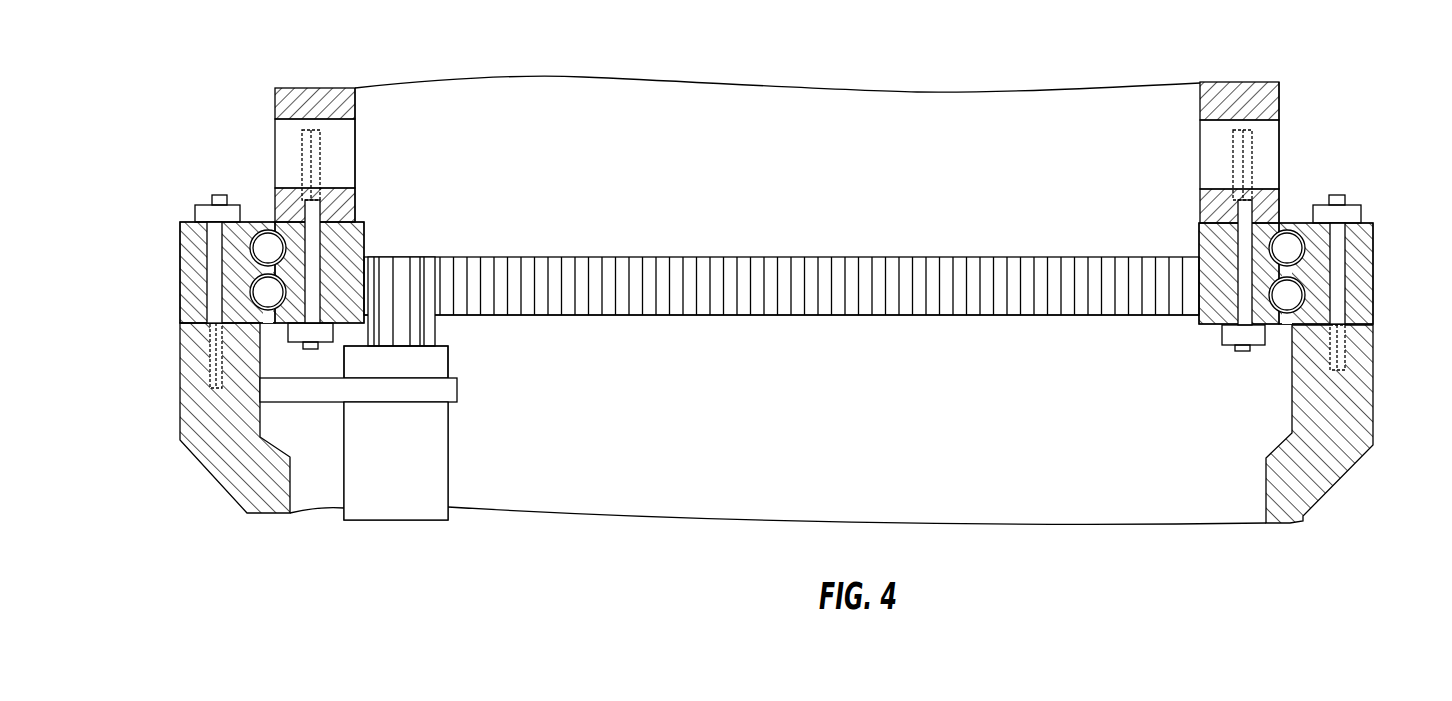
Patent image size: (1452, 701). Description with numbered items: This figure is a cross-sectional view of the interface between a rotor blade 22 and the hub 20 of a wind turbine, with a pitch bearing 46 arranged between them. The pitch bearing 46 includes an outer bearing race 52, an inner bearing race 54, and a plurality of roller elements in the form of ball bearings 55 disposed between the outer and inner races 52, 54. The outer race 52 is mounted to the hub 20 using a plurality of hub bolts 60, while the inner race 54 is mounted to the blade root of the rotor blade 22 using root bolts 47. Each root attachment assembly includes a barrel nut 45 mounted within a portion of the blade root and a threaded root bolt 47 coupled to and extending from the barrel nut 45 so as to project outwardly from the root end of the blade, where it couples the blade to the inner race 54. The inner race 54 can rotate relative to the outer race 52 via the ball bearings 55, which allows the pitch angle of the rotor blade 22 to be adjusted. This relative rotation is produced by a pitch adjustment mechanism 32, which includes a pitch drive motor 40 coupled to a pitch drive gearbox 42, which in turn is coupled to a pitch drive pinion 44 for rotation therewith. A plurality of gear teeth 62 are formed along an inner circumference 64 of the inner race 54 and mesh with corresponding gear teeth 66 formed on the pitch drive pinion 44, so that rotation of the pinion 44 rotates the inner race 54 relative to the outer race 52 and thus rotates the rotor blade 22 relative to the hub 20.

The hub 20 is at (223, 483).
The rotor blade 22 is at (1283, 93).
The pitch adjustment mechanism 32 is at (455, 488).
The pitch drive motor 40 is at (370, 508).
The pitch drive gearbox 42 is at (440, 366).
The pitch drive pinion 44 is at (438, 333).
The barrel nut 45 is at (276, 128).
The pitch bearing 46 is at (160, 240).
The root bolt 47 is at (290, 222).
The outer bearing race 52 is at (190, 290).
The inner bearing race 54 is at (357, 240).
The ball bearings 55 is at (1302, 262).
The hub bolts 60 is at (212, 206).
The gear teeth 62 is at (695, 280).
The inner circumference 64 is at (895, 318).
The gear teeth 66 is at (410, 280).